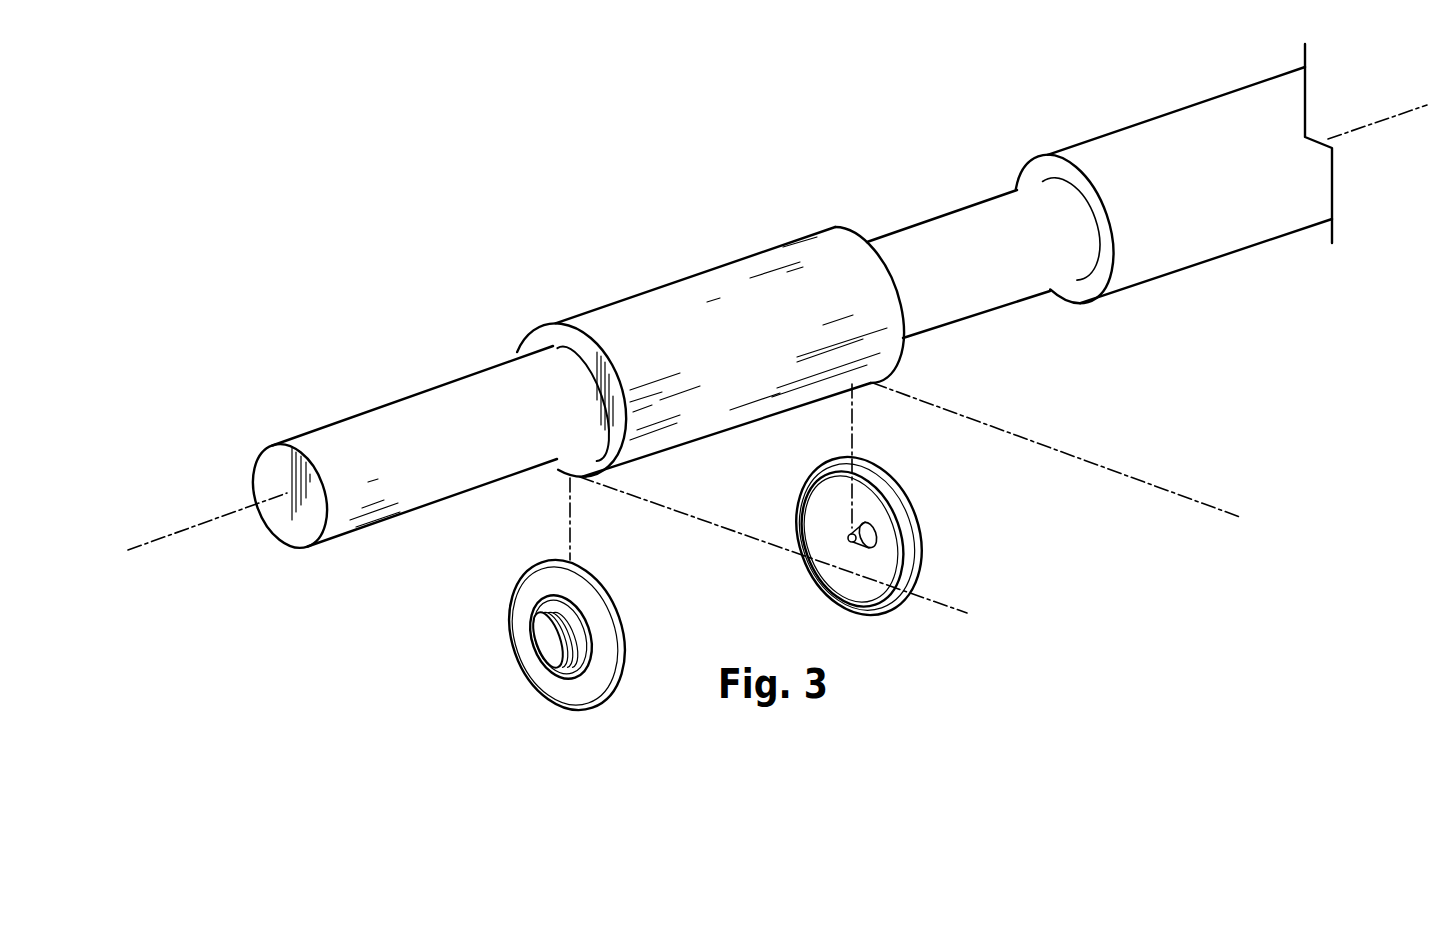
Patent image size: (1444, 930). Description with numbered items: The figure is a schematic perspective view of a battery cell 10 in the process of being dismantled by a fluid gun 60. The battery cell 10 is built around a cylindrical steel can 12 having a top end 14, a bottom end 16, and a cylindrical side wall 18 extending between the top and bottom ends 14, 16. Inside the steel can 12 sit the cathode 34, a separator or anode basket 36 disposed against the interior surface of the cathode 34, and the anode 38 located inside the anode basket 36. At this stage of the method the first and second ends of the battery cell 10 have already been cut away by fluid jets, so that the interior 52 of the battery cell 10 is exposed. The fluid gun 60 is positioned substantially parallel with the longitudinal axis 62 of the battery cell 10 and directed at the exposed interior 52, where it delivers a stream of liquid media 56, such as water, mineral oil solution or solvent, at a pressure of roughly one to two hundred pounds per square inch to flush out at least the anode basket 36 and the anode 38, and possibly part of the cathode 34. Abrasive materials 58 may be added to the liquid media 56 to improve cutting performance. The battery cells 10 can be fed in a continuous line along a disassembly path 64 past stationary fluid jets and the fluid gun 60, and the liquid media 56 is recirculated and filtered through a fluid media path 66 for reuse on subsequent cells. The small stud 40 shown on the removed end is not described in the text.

The battery cell 10 is at (769, 358).
The steel can 12 is at (657, 277).
The top end 14 is at (535, 647).
The bottom end 16 is at (915, 570).
The cylindrical side wall 18 is at (652, 425).
The cathode 34 is at (556, 468).
The anode basket 36 is at (399, 420).
The anode 38 is at (303, 520).
The cap stud 40 is at (856, 540).
The interior 52 is at (503, 344).
The liquid media 56 is at (967, 222).
The abrasive materials 58 is at (940, 305).
The fluid gun 60 is at (1172, 258).
The longitudinal axis 62 is at (207, 521).
The disassembly path 64 is at (759, 510).
The fluid media path 66 is at (1185, 132).